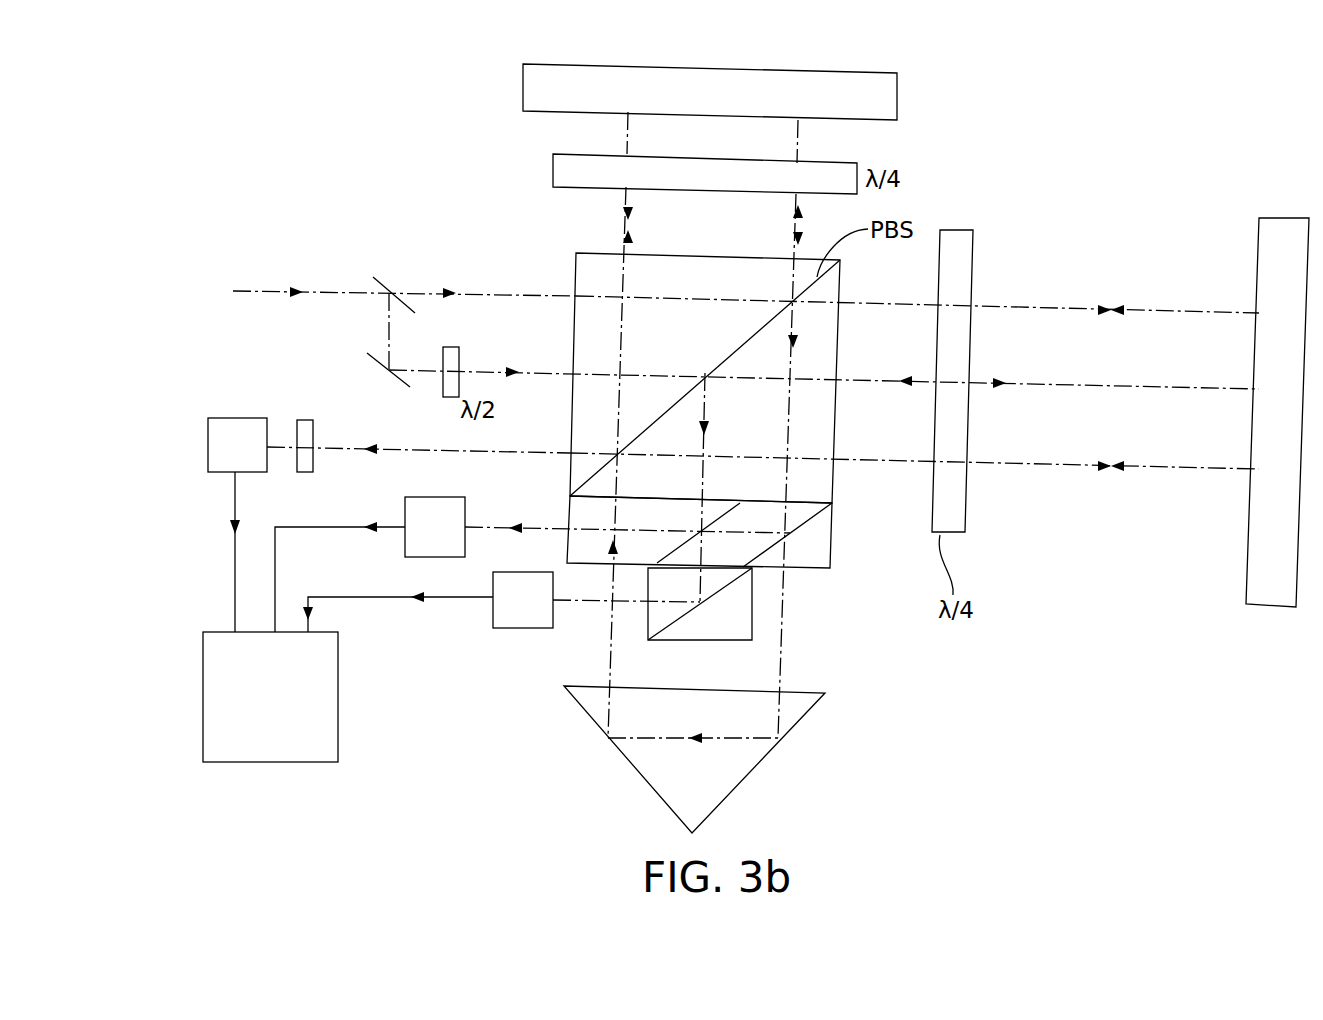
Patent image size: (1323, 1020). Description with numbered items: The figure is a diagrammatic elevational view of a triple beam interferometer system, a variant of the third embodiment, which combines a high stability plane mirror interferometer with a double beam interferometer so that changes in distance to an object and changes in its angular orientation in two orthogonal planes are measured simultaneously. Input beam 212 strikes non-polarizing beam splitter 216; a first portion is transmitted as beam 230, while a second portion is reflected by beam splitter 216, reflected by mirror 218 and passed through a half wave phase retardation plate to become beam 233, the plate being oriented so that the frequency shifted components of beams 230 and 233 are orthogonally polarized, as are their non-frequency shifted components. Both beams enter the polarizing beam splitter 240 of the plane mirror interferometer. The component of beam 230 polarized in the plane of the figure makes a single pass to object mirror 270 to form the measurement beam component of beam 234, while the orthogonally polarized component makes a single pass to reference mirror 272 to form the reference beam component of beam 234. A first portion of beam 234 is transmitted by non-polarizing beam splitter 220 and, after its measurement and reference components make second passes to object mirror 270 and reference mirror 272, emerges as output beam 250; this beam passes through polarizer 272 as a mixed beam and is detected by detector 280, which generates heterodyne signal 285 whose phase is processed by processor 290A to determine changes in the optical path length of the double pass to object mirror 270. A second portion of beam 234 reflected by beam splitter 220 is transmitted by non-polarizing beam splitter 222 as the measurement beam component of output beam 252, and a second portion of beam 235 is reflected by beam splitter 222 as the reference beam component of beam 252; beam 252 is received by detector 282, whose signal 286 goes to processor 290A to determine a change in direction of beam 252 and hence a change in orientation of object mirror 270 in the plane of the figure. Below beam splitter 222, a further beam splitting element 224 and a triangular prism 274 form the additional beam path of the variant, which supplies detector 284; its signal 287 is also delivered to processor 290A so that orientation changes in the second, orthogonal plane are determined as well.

The input beam 212 is at (287, 291).
The non-polarizing beam splitter 216 is at (395, 283).
The mirror 218 is at (368, 355).
The beam 230 is at (487, 292).
The beam 233 is at (527, 344).
The polarizing beam splitter 240 is at (697, 253).
The beam 235 is at (710, 440).
The beam 234 is at (790, 445).
The non-polarizing beam splitter 220 is at (805, 525).
The non-polarizing beam splitter 222 is at (818, 573).
The prism 224 is at (748, 590).
The reference mirror 272 is at (897, 105).
The object mirror 270 is at (1259, 232).
The retroreflector prism 274 is at (740, 783).
The detector 280 is at (208, 450).
The output beam 250 is at (360, 452).
The heterodyne signal 285 is at (230, 508).
The detector 282 is at (425, 497).
The output beam 252 is at (490, 527).
The detector signal 286 is at (367, 530).
The detector signal 287 is at (408, 600).
The detector 284 is at (533, 630).
The signal processor 290A is at (203, 650).